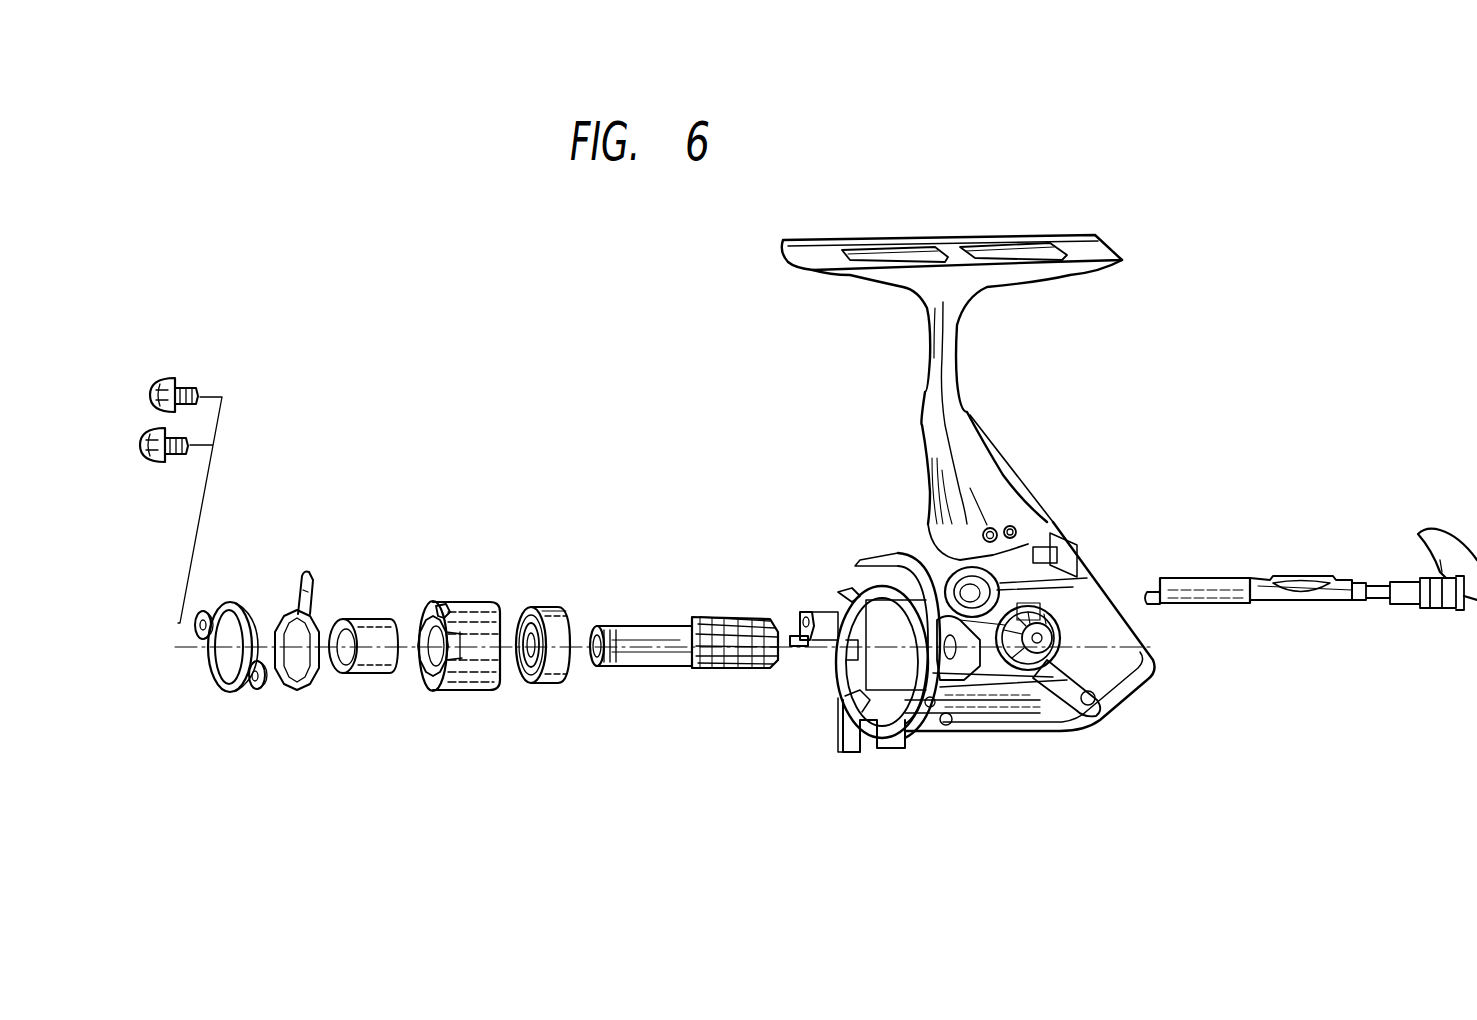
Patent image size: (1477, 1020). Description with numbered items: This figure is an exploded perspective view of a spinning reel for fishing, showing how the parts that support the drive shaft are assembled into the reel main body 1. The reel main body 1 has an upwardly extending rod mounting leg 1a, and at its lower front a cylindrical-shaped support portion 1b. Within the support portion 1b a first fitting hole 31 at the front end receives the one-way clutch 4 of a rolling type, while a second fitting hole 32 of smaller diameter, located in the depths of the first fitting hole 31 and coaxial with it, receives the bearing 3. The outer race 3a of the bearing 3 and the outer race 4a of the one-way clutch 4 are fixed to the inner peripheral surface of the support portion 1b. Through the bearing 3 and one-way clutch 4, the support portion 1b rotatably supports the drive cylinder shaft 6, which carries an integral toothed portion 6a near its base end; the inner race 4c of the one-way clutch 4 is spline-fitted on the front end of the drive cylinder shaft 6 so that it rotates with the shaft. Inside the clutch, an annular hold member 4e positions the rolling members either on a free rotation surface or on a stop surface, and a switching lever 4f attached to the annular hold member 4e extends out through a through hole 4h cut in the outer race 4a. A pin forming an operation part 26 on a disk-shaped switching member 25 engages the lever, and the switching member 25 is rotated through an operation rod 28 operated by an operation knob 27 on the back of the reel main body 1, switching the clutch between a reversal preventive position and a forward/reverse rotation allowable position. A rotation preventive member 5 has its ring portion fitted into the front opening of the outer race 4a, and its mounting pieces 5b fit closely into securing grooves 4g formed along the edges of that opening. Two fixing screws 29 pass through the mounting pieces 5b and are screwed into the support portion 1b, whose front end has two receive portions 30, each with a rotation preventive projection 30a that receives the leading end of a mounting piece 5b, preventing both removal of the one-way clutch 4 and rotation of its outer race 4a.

The reel main body 1 is at (987, 487).
The rod mounting leg 1a is at (950, 355).
The support portion 1b is at (844, 698).
The bearing 3 is at (543, 643).
The outer race 3a is at (548, 610).
The one-way clutch 4 is at (434, 648).
The outer race 4a is at (470, 602).
The inner race 4c is at (374, 666).
The annular hold member 4e is at (434, 672).
The switching lever 4f is at (313, 582).
The securing grooves 4g is at (422, 626).
The through hole 4h is at (440, 612).
The rotation preventive member 5 is at (210, 682).
The mounting pieces 5b is at (205, 610).
The drive cylinder shaft 6 is at (684, 644).
The toothed portion 6a is at (722, 670).
The switching member 25 is at (1299, 587).
The operation part 26 is at (1158, 596).
The operation knob 27 is at (1438, 534).
The operation rod 28 is at (1232, 578).
The fixing screws 29 is at (178, 384).
The receive portions 30 is at (798, 614).
The rotation preventive projection 30a is at (842, 594).
The first fitting hole 31 is at (858, 598).
The second fitting hole 32 is at (886, 660).